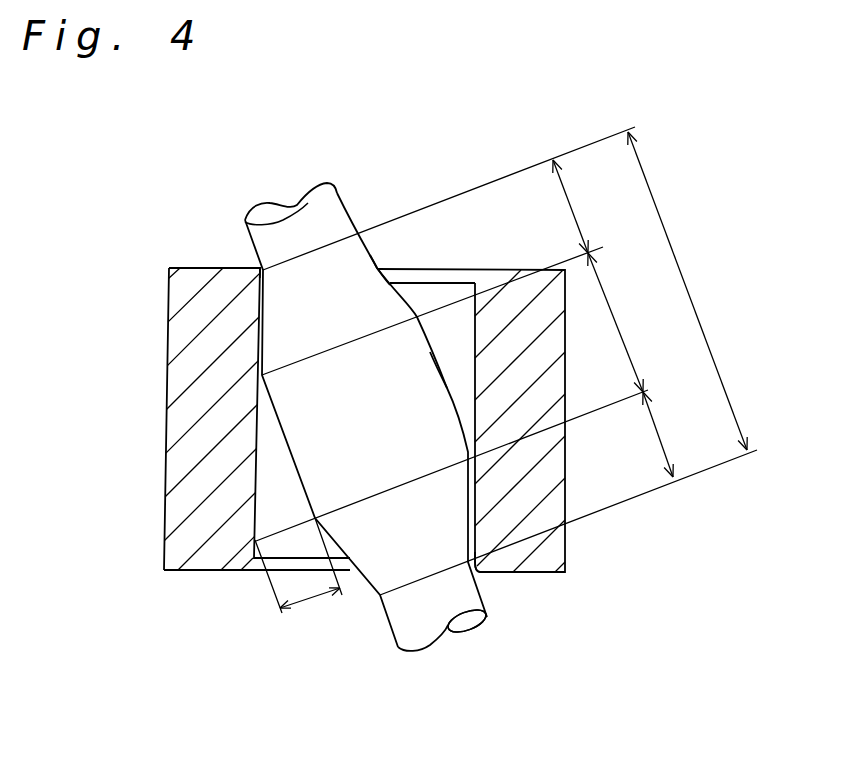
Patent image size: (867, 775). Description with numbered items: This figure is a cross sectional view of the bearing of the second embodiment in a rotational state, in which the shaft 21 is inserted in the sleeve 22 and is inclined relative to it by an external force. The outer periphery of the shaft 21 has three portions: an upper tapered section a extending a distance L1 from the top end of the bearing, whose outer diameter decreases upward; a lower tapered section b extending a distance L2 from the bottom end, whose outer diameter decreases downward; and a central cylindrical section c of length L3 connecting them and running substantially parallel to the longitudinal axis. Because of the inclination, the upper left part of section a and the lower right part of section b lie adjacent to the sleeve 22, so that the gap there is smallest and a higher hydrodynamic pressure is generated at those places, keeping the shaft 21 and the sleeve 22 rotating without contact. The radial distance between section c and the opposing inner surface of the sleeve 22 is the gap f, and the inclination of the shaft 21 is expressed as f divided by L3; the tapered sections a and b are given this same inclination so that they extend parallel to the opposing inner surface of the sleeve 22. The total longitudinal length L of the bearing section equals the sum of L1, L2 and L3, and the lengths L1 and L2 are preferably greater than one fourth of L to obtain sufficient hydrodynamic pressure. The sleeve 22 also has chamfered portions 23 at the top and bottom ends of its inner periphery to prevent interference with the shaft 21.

The shaft 21 is at (308, 222).
The sleeve 22 is at (178, 350).
The chamfered portion 23 is at (257, 265).
The section a is at (363, 297).
The section b is at (417, 540).
The section c is at (414, 372).
The radial distance f is at (298, 576).
The longitudinal length L is at (506, 361).
The length L1 is at (585, 206).
The length L2 is at (674, 434).
The length L3 is at (624, 322).